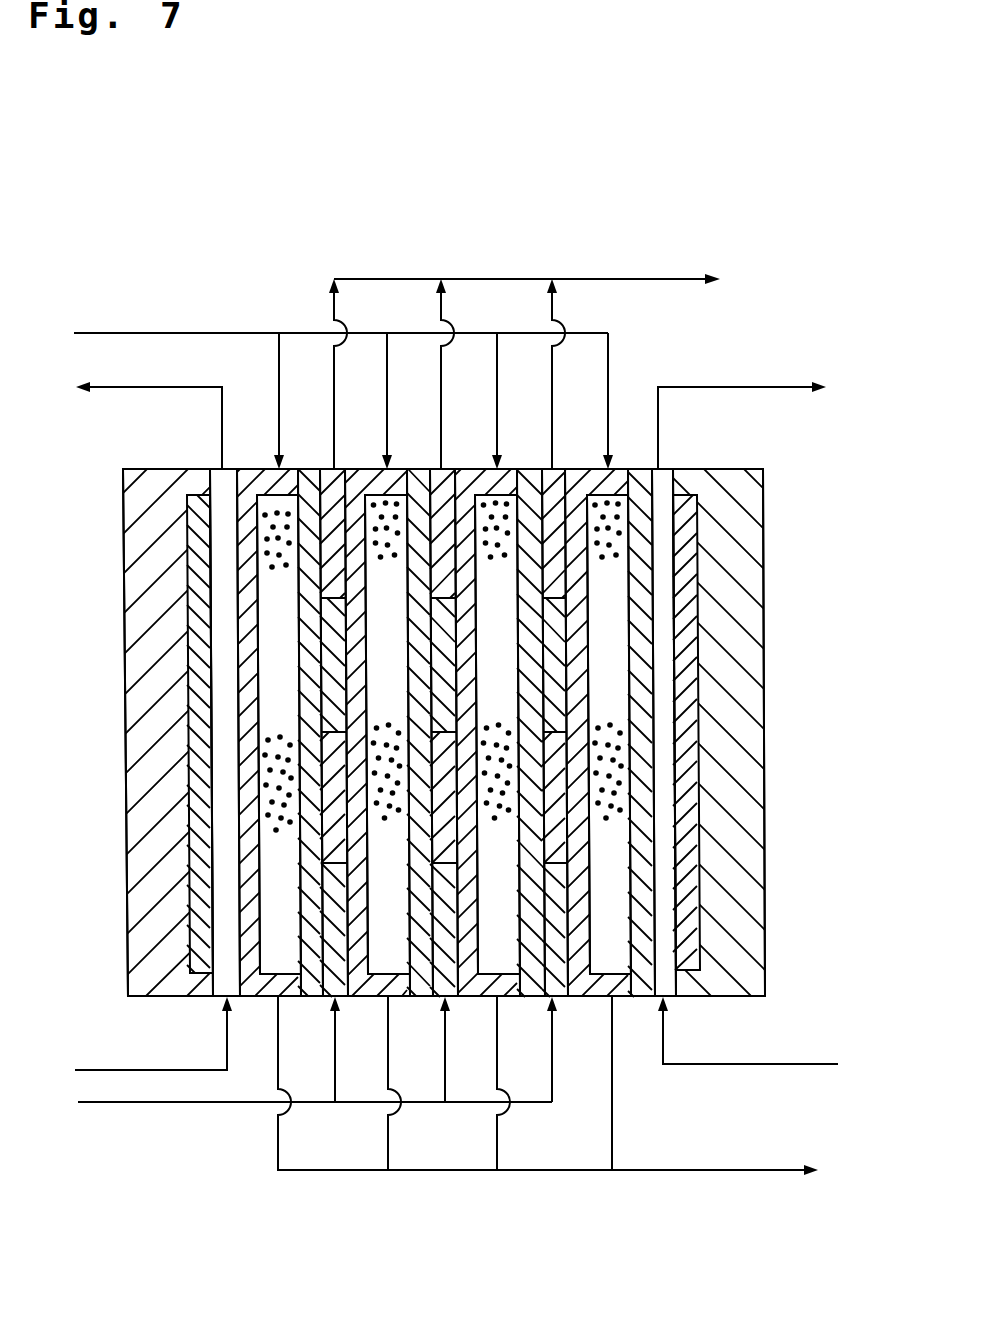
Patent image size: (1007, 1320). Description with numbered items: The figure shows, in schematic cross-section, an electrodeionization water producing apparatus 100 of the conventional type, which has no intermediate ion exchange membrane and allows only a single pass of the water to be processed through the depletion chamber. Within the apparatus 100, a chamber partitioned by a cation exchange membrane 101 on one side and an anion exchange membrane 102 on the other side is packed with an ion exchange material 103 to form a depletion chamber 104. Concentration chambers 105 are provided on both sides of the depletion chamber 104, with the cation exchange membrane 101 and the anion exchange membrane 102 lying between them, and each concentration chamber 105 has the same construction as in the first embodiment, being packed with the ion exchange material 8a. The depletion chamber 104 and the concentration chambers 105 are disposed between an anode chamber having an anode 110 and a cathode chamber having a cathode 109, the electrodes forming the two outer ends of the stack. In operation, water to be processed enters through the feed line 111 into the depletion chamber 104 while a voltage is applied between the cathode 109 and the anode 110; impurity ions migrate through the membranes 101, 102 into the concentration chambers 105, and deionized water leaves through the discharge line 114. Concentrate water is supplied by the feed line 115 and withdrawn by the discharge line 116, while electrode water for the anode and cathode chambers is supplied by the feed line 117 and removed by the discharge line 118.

The electrodeionization water producing apparatus 100 is at (467, 250).
The cation exchange membrane 101 is at (237, 600).
The anion exchange membrane 102 is at (643, 613).
The ion exchange material 103 is at (267, 540).
The depletion chamber 104 is at (273, 628).
The concentration chamber 105 is at (337, 668).
The cathode 109 is at (200, 873).
The anode 110 is at (690, 909).
The feed line of water to be processed 111 is at (146, 333).
The discharge line of deionized water 114 is at (680, 1172).
The feed line of concentrate water 115 is at (147, 1105).
The discharge line of concentrate water 116 is at (637, 279).
The feed line of electrode water 117 is at (122, 1070).
The discharge line of electrode water 118 is at (163, 388).
The ion exchange material 8a is at (447, 918).